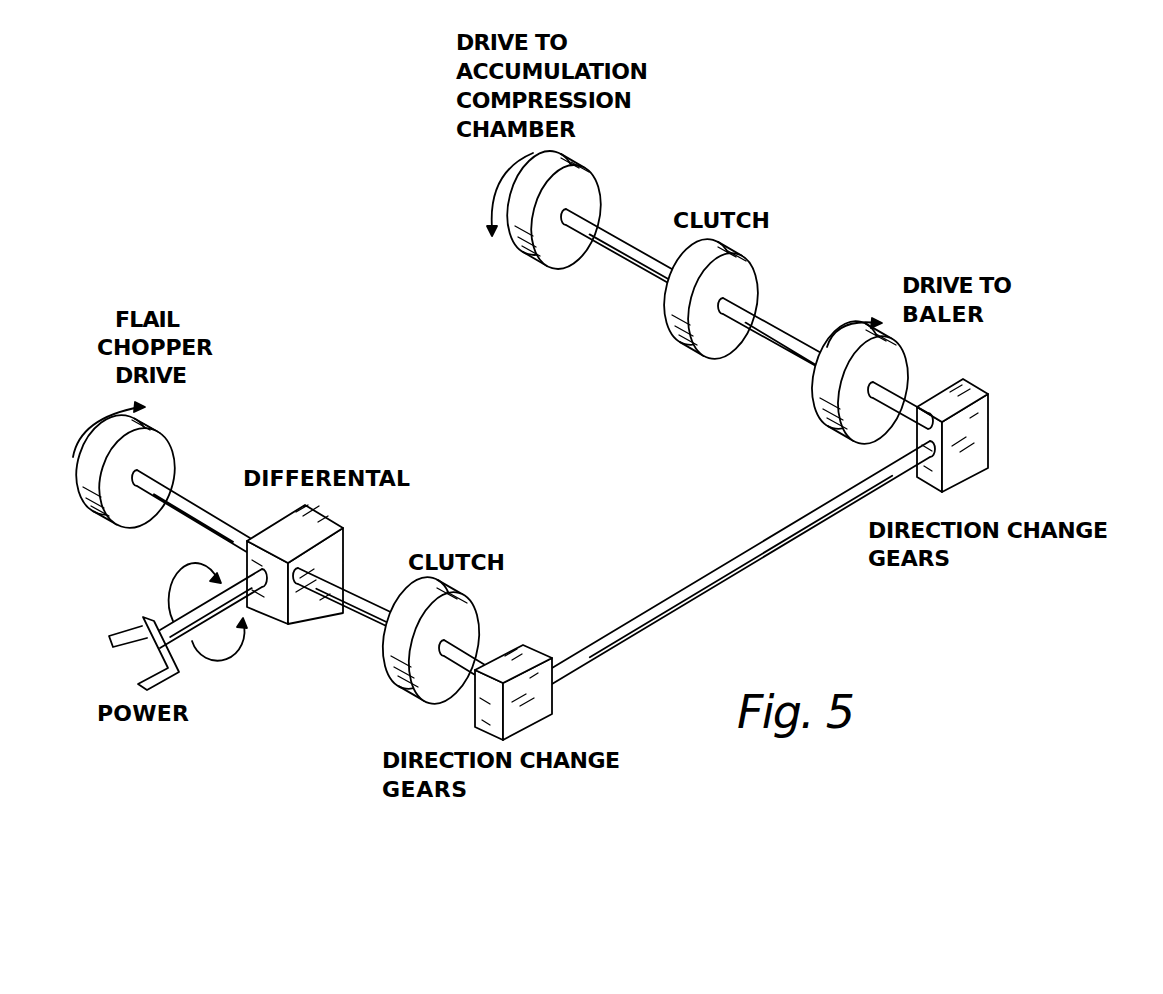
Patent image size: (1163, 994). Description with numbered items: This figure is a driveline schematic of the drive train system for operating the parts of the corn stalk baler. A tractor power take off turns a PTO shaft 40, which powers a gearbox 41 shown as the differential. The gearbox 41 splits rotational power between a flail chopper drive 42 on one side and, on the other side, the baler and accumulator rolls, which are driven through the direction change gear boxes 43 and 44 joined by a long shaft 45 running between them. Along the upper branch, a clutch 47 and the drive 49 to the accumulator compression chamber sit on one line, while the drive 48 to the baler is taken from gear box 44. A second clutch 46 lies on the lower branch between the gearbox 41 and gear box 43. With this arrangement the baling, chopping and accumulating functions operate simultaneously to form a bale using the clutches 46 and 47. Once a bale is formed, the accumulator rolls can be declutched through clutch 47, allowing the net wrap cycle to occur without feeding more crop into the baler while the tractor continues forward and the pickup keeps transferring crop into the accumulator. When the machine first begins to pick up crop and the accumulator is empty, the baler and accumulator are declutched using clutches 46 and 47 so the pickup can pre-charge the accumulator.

The PTO shaft 40 is at (167, 627).
The gearbox 41 is at (342, 556).
The flail chopper drive 42 is at (168, 458).
The gear box 43 is at (525, 643).
The gear box 44 is at (983, 443).
The drive shaft 45 is at (705, 580).
The clutch 46 is at (382, 677).
The clutch 47 is at (755, 281).
The drive to the baler 48 is at (818, 401).
The drive to the accumulator compression chamber 49 is at (593, 183).